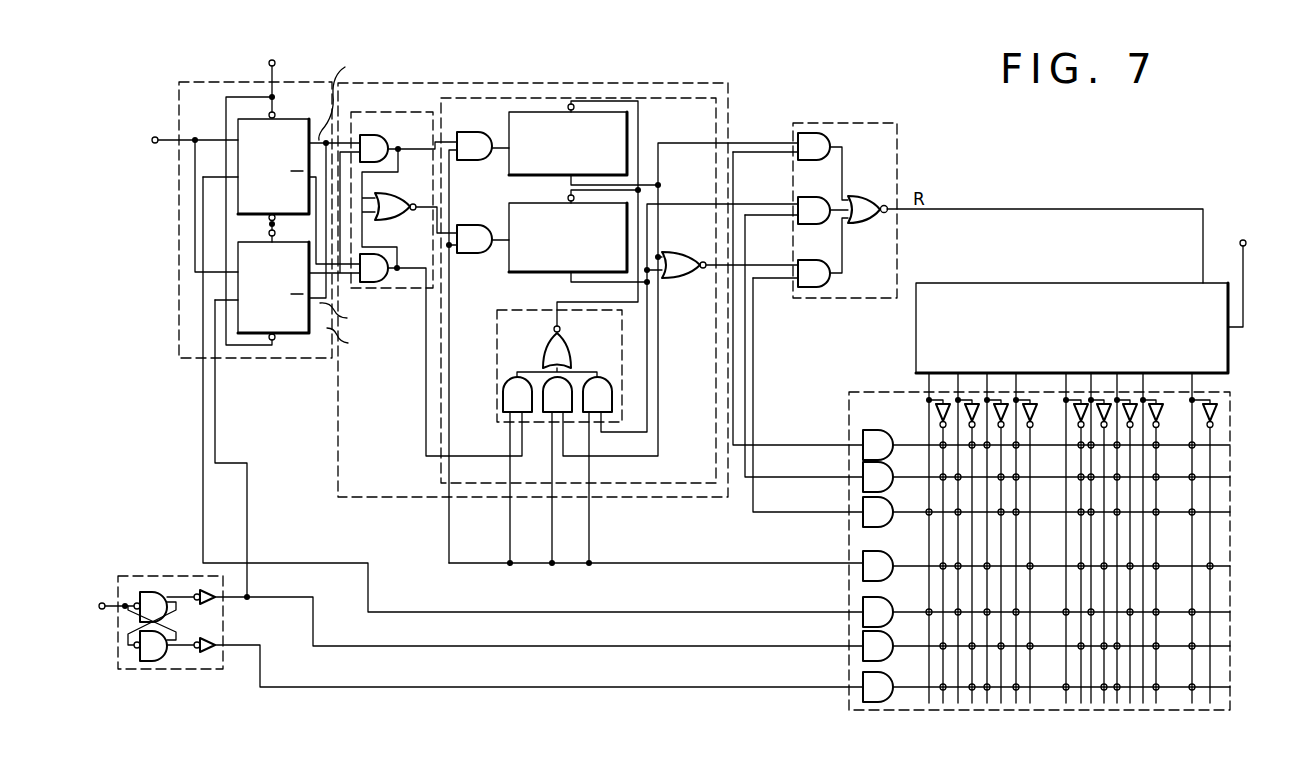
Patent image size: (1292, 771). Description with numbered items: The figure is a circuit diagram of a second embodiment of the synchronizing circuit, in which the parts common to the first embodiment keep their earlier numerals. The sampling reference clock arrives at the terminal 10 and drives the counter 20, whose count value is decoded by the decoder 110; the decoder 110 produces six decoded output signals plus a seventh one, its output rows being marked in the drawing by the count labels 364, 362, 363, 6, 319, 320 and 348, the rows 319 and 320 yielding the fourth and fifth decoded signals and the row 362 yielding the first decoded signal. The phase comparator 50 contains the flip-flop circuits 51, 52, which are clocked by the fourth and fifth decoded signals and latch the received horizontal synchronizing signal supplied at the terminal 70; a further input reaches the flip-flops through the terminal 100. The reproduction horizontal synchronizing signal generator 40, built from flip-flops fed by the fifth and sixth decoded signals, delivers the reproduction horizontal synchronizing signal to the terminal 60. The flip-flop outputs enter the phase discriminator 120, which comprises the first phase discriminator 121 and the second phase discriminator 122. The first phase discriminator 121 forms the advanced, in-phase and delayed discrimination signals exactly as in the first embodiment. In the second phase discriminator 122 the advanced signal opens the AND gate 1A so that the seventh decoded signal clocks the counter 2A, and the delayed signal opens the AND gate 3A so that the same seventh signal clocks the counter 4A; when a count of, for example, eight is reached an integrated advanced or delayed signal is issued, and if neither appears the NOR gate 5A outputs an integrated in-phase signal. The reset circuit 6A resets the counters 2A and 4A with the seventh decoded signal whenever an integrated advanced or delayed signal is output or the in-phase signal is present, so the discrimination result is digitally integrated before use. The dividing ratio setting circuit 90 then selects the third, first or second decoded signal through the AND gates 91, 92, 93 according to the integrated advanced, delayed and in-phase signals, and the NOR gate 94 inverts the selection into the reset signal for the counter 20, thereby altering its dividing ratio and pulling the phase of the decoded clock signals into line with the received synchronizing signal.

The phase comparator 50 is at (207, 83).
The flip-flop circuit 51 is at (287, 120).
The flip-flop circuit 52 is at (275, 335).
The terminal 70 is at (155, 136).
The gate signal input terminal 100 is at (276, 64).
The phase discriminator 120 is at (606, 84).
The first phase discriminator 121 is at (370, 112).
The second phase discriminator 122 is at (465, 97).
The AND gate 1A is at (460, 132).
The counter 2A is at (627, 120).
The AND gate 3A is at (459, 227).
The counter 4A is at (507, 266).
The NOR gate 5A is at (675, 252).
The reset circuit 6A is at (622, 348).
The dividing ratio setting circuit 90 is at (852, 123).
The AND gate 91 is at (834, 138).
The AND gate 92 is at (800, 197).
The AND gate 93 is at (800, 260).
The NOR gate 94 is at (852, 197).
The counter 20 is at (943, 283).
The terminal 10 is at (1241, 249).
The decoder 110 is at (862, 382).
The decode line for count 364 is at (1066, 442).
The count value for signal P1 362 is at (1066, 473).
The dividing ratio 363 is at (1066, 509).
The decode line for count 6 is at (1058, 564).
The count value for signal P4 319 is at (1066, 609).
The count value for signal P5 320 is at (1066, 644).
The decode line for count 348 is at (1066, 684).
The reproduction horizontal synchronizing signal generator 40 is at (166, 577).
The terminal 60 is at (102, 603).